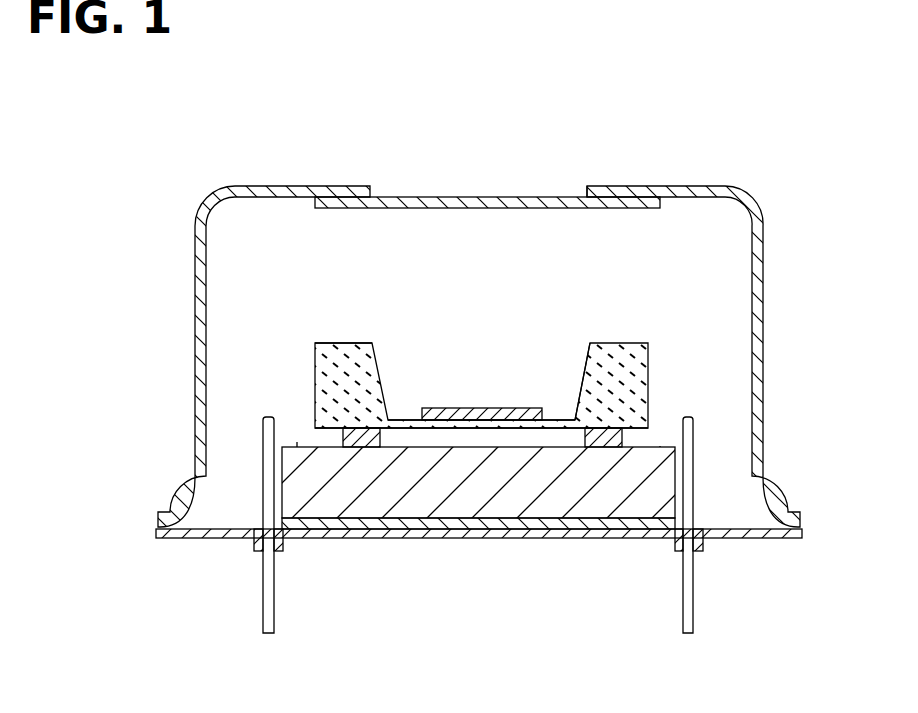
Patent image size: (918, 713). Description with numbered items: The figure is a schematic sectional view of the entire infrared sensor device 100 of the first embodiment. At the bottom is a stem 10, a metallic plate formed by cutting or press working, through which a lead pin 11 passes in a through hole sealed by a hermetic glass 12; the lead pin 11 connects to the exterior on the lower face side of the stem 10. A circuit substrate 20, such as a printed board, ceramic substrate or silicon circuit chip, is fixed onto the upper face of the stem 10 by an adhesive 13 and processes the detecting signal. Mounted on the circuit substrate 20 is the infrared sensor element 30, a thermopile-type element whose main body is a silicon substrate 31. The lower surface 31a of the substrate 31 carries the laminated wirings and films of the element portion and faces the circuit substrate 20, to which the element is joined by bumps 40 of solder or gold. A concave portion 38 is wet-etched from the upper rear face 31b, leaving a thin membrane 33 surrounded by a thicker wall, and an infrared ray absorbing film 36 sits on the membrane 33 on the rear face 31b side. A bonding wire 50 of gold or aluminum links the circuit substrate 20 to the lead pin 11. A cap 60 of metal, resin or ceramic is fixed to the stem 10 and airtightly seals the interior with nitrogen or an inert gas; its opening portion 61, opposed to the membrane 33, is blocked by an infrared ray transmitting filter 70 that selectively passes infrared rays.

The infrared sensor device 100 is at (188, 219).
The stem 10 is at (790, 537).
The lead pin 11 is at (263, 628).
The hermetic glass 12 is at (254, 546).
The adhesive 13 is at (470, 524).
The circuit substrate 20 is at (567, 480).
The infrared sensor element 30 is at (638, 366).
The substrate 31 is at (481, 385).
The surface 31a is at (417, 430).
The rear face 31b is at (330, 343).
The membrane 33 is at (408, 420).
The infrared ray absorbing film 36 is at (517, 408).
The concave portion 38 is at (578, 405).
The bump 40 is at (360, 435).
The bonding wire 50 is at (297, 442).
The cap 60 is at (737, 206).
The opening portion 61 is at (582, 193).
The infrared ray transmitting filter 70 is at (452, 197).